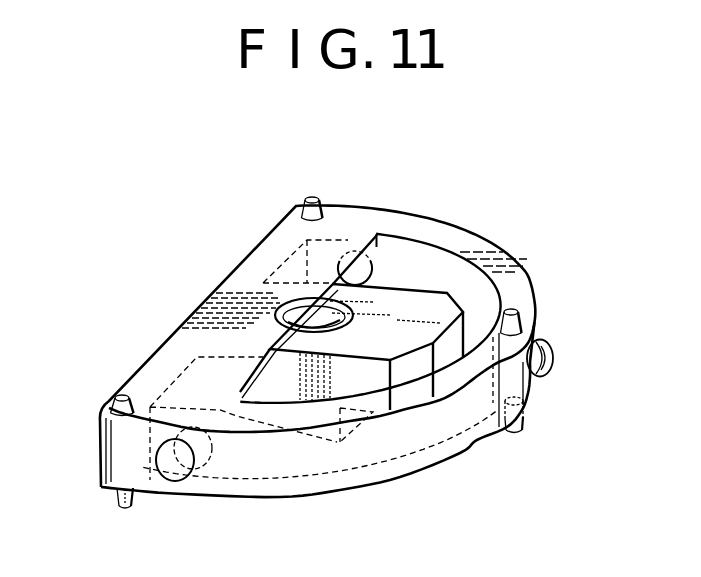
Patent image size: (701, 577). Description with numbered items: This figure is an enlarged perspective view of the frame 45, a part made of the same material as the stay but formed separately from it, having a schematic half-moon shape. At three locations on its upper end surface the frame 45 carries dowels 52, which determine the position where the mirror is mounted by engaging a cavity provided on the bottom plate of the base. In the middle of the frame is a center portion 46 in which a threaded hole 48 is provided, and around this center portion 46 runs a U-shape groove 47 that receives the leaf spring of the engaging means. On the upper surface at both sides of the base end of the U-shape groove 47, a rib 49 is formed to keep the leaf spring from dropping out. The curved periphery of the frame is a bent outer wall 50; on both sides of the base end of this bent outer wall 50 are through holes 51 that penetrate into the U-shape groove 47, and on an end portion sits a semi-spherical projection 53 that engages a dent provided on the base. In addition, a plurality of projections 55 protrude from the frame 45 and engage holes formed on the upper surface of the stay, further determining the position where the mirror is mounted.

The frame 45 is at (536, 268).
The center portion 46 is at (456, 274).
The U-shape groove 47 is at (463, 262).
The threaded hole 48 is at (275, 308).
The rib 49 is at (330, 248).
The bent outer wall 50 is at (450, 446).
The through hole 51 is at (417, 296).
The dowel 52 is at (311, 198).
The semi-spherical projection 53 is at (553, 356).
The projection 55 is at (128, 504).